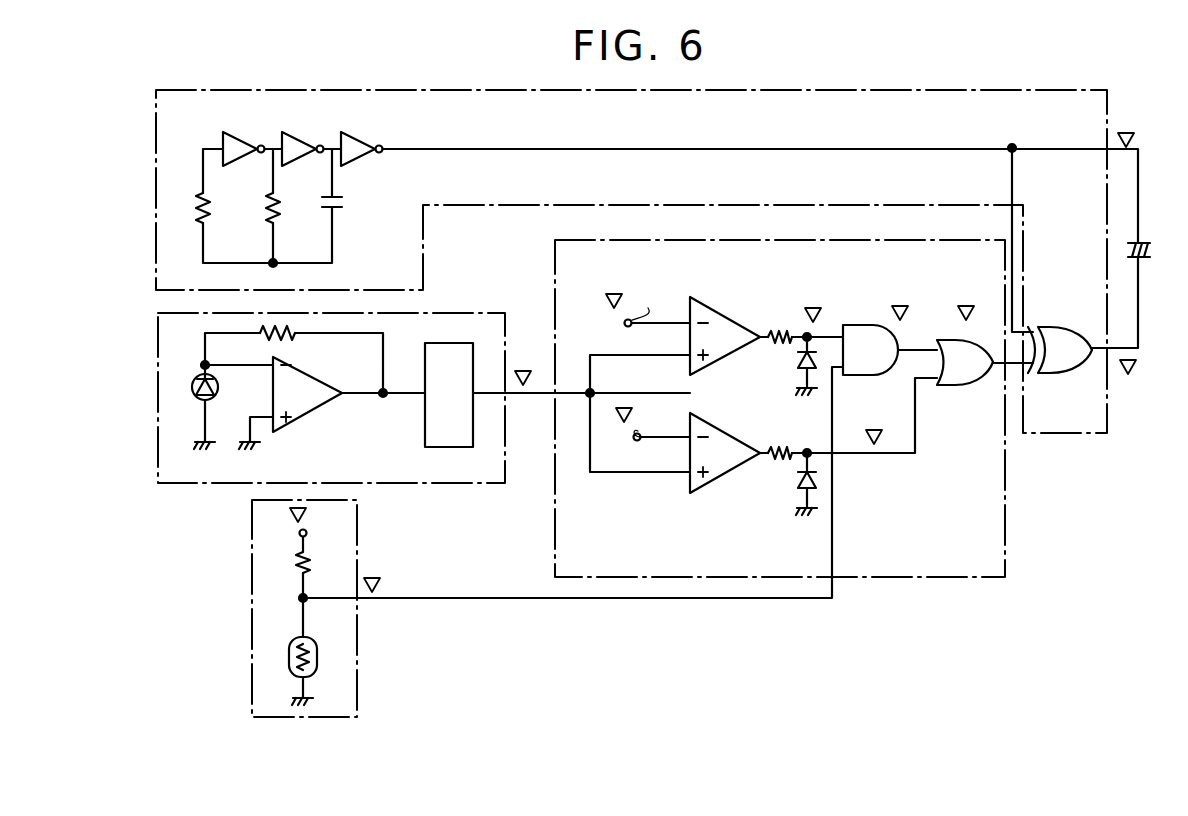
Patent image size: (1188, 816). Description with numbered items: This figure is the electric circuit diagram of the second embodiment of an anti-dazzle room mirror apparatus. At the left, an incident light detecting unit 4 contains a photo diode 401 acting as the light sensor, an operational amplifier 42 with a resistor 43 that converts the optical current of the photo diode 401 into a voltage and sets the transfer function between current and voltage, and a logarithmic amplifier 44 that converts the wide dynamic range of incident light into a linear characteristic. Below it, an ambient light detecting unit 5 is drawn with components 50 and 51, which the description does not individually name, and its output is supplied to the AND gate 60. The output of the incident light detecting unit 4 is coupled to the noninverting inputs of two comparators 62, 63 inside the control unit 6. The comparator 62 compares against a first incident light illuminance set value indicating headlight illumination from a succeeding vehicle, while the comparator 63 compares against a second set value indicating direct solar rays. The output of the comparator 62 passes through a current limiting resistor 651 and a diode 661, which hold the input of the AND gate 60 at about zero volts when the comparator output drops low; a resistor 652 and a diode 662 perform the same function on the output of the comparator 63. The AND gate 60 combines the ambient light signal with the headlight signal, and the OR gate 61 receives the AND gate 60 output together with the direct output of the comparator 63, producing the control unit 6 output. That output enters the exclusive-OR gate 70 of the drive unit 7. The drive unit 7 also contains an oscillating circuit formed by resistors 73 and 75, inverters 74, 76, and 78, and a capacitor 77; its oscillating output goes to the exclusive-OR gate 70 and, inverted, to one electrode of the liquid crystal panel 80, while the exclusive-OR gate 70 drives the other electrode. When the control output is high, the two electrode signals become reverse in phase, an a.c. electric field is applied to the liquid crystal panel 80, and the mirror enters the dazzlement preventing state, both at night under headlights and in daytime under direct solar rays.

The incident light detecting unit 4 is at (183, 484).
The ambient light detecting unit 5 is at (357, 655).
The control unit 6 is at (700, 240).
The drive unit 7 is at (975, 89).
The operational amplifier 42 is at (308, 420).
The resistor 43 is at (288, 338).
The logarithmic amplifier 44 is at (425, 418).
The thermistor 50 is at (318, 670).
The resistor 51 is at (310, 564).
The AND gate 60 is at (858, 376).
The OR gate 61 is at (958, 386).
The comparator 62 is at (730, 312).
The comparator 63 is at (722, 483).
The exclusive-OR gate 70 is at (1057, 374).
The resistor 73 is at (197, 212).
The inverter 74 is at (240, 130).
The resistor 75 is at (266, 212).
The inverter 76 is at (303, 130).
The capacitor 77 is at (320, 208).
The inverter 78 is at (368, 130).
The liquid crystal panel 80 is at (1150, 257).
The photo diode 401 is at (196, 400).
The resistor 651 is at (779, 330).
The resistor 652 is at (779, 446).
The diode 661 is at (799, 362).
The diode 662 is at (799, 485).